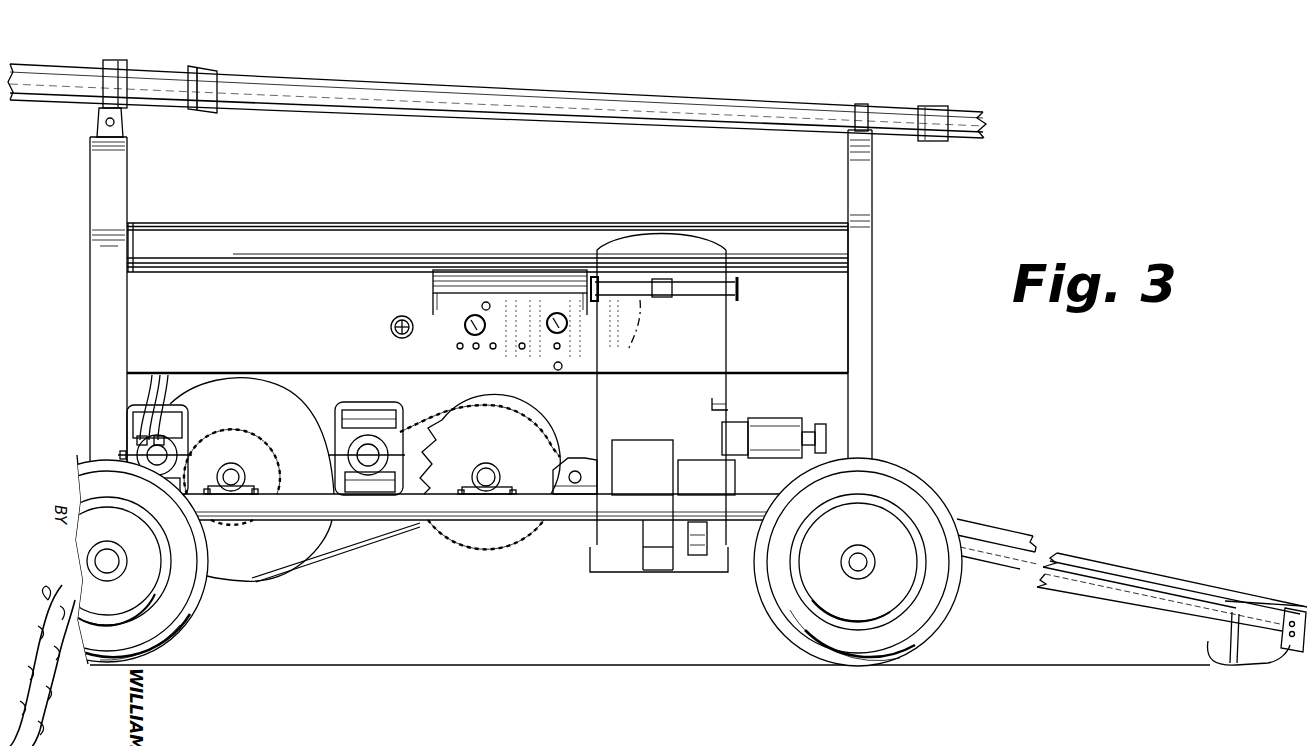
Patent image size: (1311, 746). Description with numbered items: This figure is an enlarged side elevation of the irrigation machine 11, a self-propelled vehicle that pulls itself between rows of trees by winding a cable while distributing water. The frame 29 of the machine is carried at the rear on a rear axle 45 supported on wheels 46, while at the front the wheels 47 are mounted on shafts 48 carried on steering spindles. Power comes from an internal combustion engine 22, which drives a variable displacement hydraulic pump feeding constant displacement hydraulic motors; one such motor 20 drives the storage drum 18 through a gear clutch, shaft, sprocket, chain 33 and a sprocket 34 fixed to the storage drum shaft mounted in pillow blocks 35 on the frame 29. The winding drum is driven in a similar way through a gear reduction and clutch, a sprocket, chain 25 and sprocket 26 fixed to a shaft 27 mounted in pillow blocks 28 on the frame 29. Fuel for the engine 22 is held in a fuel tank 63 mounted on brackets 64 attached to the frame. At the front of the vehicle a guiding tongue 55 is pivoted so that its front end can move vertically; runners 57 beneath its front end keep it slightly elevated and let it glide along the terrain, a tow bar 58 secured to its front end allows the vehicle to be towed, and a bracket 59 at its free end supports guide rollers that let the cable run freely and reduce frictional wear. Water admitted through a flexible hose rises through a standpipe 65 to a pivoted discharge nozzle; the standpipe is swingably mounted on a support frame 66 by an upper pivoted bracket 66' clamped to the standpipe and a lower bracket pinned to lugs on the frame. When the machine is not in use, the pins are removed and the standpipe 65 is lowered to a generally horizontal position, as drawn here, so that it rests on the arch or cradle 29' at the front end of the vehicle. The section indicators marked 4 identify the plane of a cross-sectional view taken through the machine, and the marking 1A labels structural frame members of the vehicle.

The standpipe 65 is at (52, 50).
The upper pivoted bracket 66' is at (134, 68).
The support frame 66 is at (77, 301).
The arch or cradle 29' is at (887, 296).
The fuel tank 63 is at (700, 326).
The internal combustion engine 22 is at (782, 392).
The section line 4- 4 is at (75, 375).
The chain 33 is at (222, 420).
The constant displacement hydraulic motor 20 is at (160, 458).
The sprocket 34 is at (272, 427).
The pillow blocks 35 is at (230, 466).
The storage drum 18 is at (240, 583).
The chain 25 is at (432, 400).
The irrigation machine 11 is at (478, 556).
The sprocket 26 is at (448, 435).
The shaft 27 is at (489, 472).
The pillow blocks 28 is at (474, 472).
The frame 29 is at (567, 509).
The frame 1A is at (334, 554).
The guiding tongue 55 is at (1188, 600).
The tow bar 58 is at (1286, 604).
The runners 57 is at (1212, 648).
The bracket 59 is at (1292, 655).
The brackets 64 is at (648, 562).
The wheels 47 is at (940, 462).
The shafts 48 is at (860, 556).
The wheels 46 is at (178, 626).
The rear axle 45 is at (109, 552).